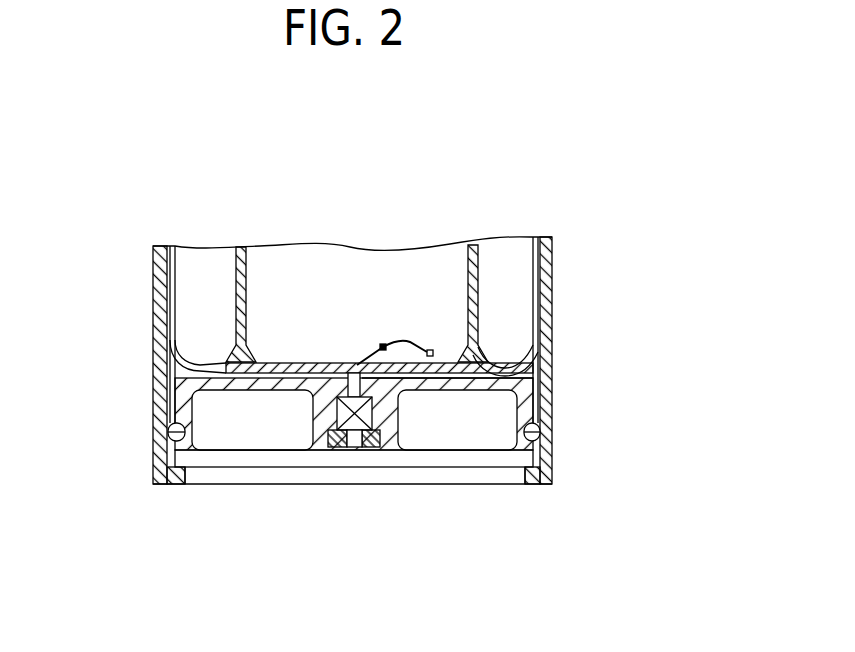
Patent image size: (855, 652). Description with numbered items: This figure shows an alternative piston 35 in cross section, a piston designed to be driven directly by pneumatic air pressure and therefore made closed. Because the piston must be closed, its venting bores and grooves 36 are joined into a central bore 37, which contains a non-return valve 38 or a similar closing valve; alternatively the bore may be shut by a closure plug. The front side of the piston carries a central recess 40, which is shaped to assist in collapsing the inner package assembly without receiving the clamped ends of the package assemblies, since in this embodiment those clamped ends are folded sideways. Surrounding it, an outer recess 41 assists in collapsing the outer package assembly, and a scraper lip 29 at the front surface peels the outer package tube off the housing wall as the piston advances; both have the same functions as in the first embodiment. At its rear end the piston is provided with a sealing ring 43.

The scraper lip 29 is at (168, 356).
The piston 35 is at (567, 308).
The venting bores and grooves 36 is at (483, 372).
The central bore 37 is at (353, 447).
The non-return valve 38 is at (409, 483).
The central recess 40 is at (383, 350).
The outer recess 41 is at (192, 363).
The sealing ring 43 is at (166, 427).